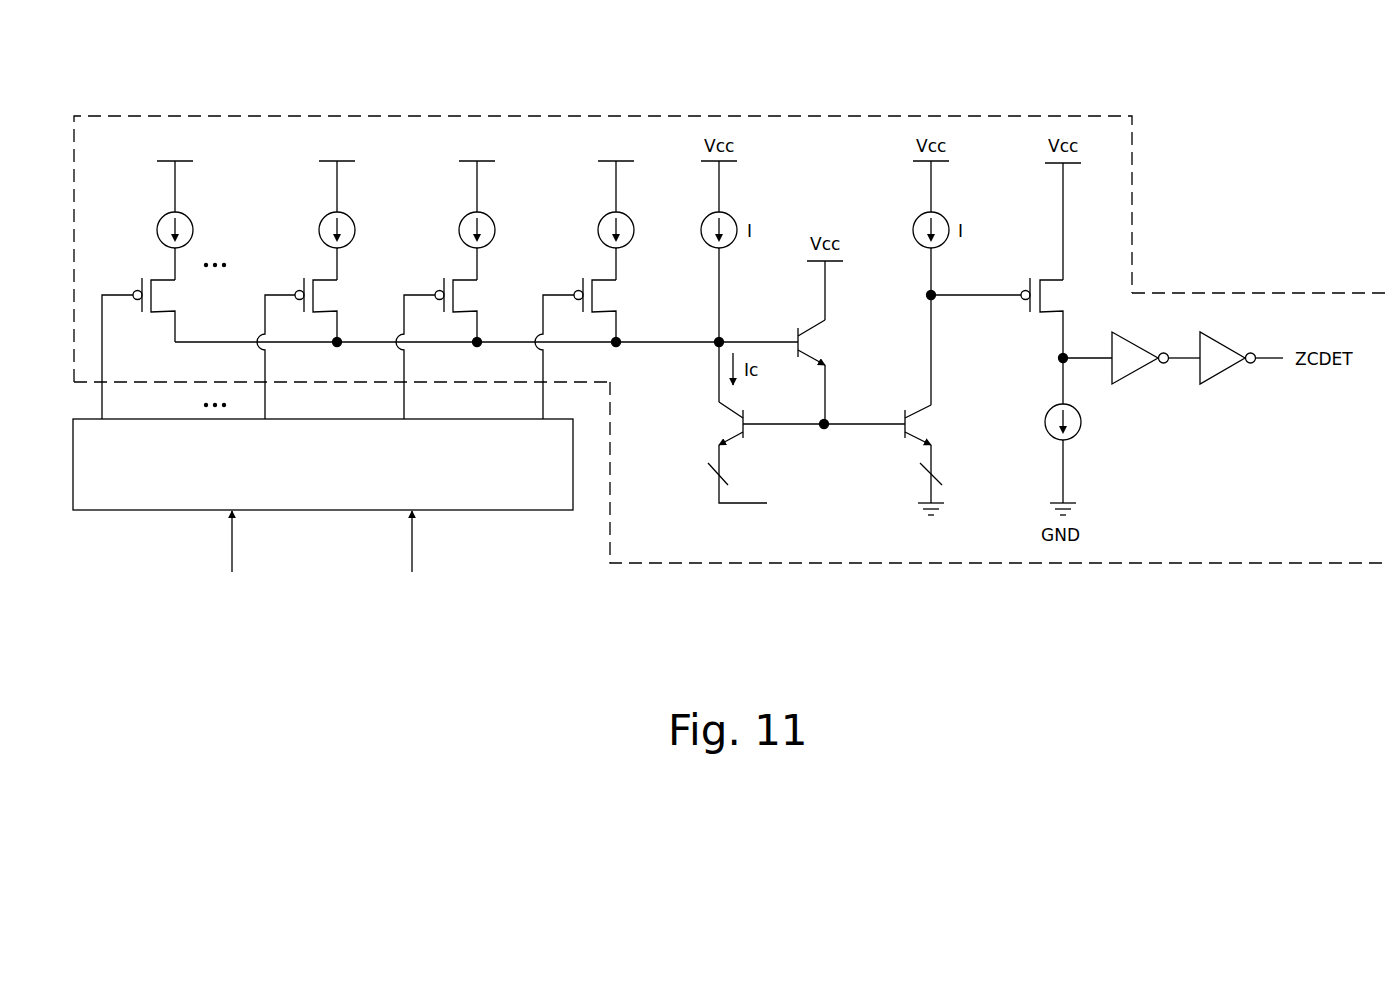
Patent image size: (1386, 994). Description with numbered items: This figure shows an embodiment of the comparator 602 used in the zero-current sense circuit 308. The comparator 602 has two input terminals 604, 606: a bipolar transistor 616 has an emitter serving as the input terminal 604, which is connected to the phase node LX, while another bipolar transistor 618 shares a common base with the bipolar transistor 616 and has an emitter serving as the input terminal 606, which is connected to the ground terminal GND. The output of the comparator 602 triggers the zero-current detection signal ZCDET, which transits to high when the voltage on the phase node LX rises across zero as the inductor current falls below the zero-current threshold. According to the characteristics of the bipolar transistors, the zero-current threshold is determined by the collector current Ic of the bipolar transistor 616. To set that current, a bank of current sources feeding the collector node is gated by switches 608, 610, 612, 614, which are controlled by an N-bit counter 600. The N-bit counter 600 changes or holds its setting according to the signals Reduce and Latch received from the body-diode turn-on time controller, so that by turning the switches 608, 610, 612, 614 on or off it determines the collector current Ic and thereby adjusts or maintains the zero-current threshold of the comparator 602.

The zero-current sense circuit 308 is at (1302, 102).
The comparator 602 is at (1262, 293).
The N-bit counter 600 is at (513, 510).
The input terminal 604 is at (710, 478).
The input terminal 606 is at (920, 478).
The switch 608 is at (622, 293).
The switch 610 is at (444, 270).
The switch 612 is at (304, 270).
The switch 614 is at (142, 270).
The bipolar transistor 616 is at (709, 425).
The bipolar transistor 618 is at (938, 423).